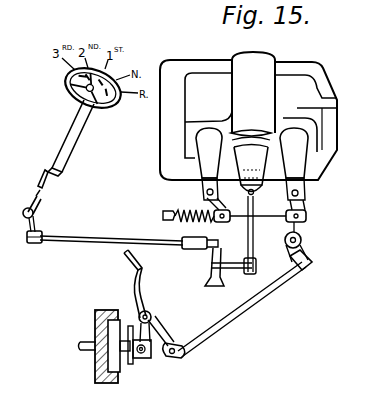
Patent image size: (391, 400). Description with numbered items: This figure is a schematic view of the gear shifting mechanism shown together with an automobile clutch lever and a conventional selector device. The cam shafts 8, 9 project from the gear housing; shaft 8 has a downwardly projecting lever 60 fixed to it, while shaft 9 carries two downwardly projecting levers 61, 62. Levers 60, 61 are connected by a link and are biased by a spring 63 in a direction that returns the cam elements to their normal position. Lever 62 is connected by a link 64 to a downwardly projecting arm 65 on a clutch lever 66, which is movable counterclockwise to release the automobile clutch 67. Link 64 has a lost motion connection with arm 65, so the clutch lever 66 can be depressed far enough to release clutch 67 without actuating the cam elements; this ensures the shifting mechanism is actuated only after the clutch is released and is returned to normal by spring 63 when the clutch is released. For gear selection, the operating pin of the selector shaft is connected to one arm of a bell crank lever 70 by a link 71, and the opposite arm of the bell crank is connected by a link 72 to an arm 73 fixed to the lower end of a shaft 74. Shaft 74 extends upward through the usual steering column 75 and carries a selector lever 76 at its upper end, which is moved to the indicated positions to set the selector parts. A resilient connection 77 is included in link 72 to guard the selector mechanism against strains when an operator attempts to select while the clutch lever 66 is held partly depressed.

The cam shaft 8 is at (197, 189).
The cam shaft 9 is at (304, 188).
The lever 60 is at (206, 195).
The lever 61 is at (306, 200).
The lever 62 is at (303, 245).
The spring 63 is at (186, 220).
The link 64 is at (262, 300).
The arm 65 is at (160, 340).
The clutch lever 66 is at (136, 296).
The automobile clutch 67 is at (115, 362).
The bell crank lever 70 is at (228, 270).
The link 71 is at (262, 258).
The link 72 is at (140, 221).
The arm 73 is at (39, 226).
The shaft 74 is at (42, 182).
The steering column 75 is at (62, 152).
The selector lever 76 is at (68, 97).
The resilient connection 77 is at (188, 246).